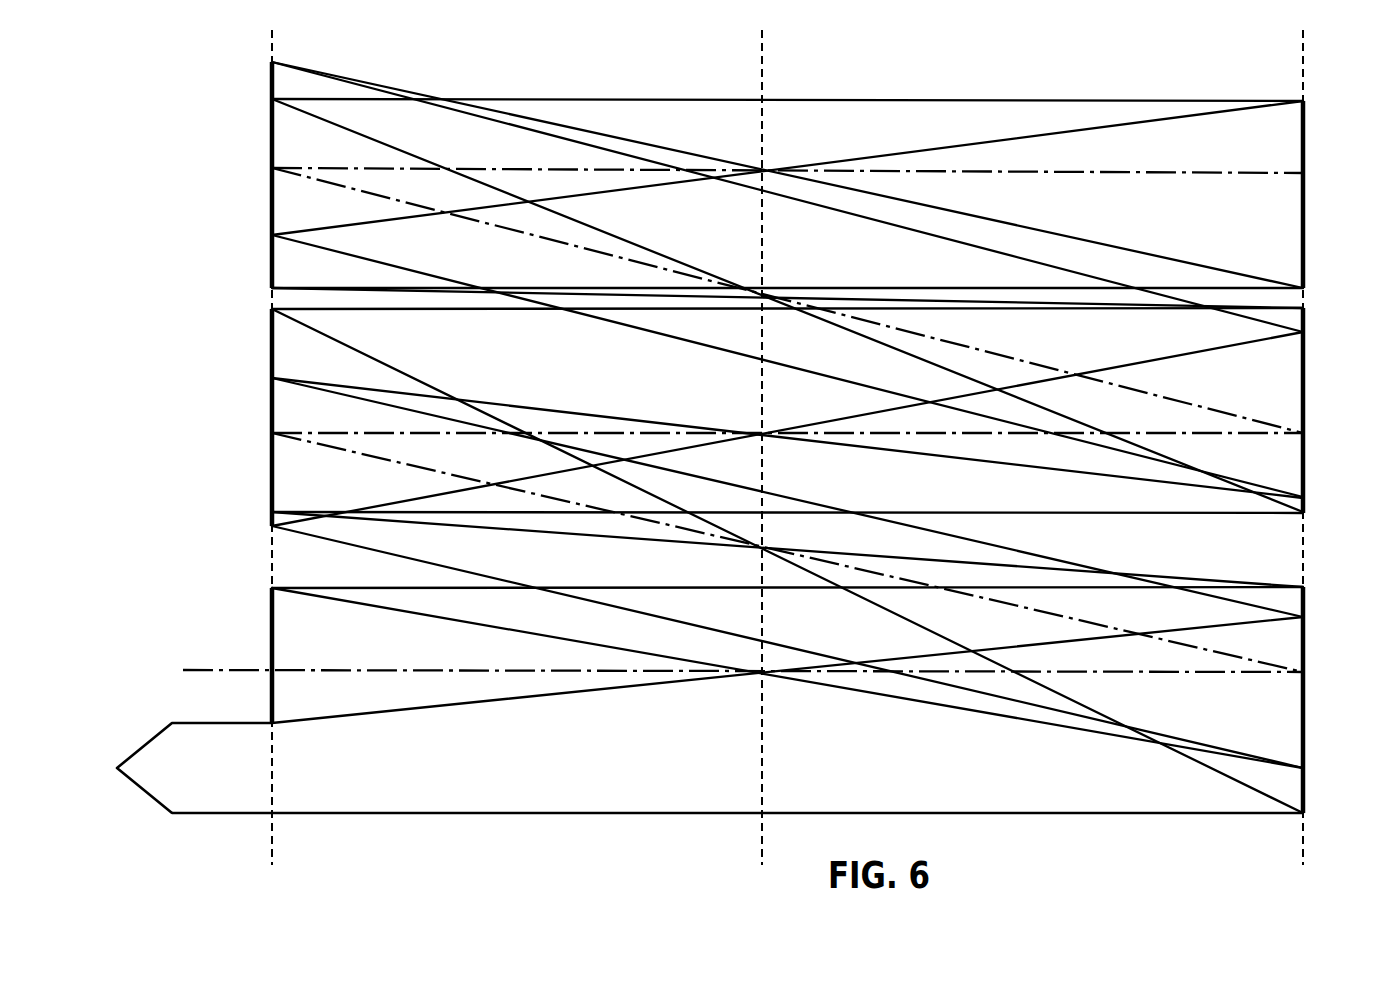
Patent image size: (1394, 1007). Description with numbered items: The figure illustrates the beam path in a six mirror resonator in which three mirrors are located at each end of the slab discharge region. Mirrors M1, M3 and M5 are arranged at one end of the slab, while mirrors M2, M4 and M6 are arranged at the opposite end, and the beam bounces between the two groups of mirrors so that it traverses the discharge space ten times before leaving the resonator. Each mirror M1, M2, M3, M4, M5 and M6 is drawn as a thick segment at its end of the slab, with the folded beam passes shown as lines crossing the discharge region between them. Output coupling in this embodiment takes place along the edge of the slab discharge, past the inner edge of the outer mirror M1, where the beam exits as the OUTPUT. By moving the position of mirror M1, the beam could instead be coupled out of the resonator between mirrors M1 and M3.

The mirror M1 is at (272, 642).
The mirror M2 is at (1304, 703).
The mirror M3 is at (272, 392).
The mirror M4 is at (1304, 410).
The mirror M5 is at (272, 152).
The mirror M6 is at (1304, 182).
The output OUTPUT is at (238, 814).